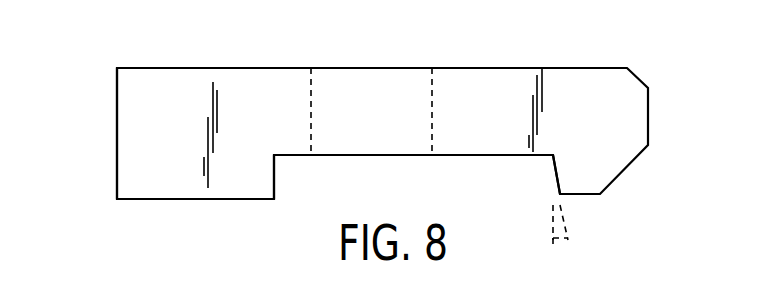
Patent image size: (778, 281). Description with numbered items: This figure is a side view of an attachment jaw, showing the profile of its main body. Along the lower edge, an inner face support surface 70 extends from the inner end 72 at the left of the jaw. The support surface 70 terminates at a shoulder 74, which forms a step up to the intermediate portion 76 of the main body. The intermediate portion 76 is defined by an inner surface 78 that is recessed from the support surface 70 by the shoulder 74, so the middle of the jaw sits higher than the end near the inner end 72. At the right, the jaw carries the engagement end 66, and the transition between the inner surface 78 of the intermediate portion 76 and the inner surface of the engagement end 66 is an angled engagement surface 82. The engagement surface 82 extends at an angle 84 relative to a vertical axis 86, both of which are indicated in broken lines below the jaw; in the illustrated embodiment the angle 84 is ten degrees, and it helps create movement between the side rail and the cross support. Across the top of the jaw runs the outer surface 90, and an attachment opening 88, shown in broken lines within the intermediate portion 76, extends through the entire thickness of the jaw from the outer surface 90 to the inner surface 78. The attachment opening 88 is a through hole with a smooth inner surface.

The engagement end 66 is at (633, 115).
The inner face support surface 70 is at (195, 199).
The inner end 72 is at (117, 130).
The shoulder 74 is at (274, 178).
The intermediate portion 76 is at (283, 98).
The inner surface 78 is at (460, 155).
The angled engagement surface 82 is at (556, 175).
The angle 84 is at (562, 240).
The vertical axis 86 is at (552, 226).
The attachment opening 88 is at (380, 83).
The outer surface 90 is at (515, 68).